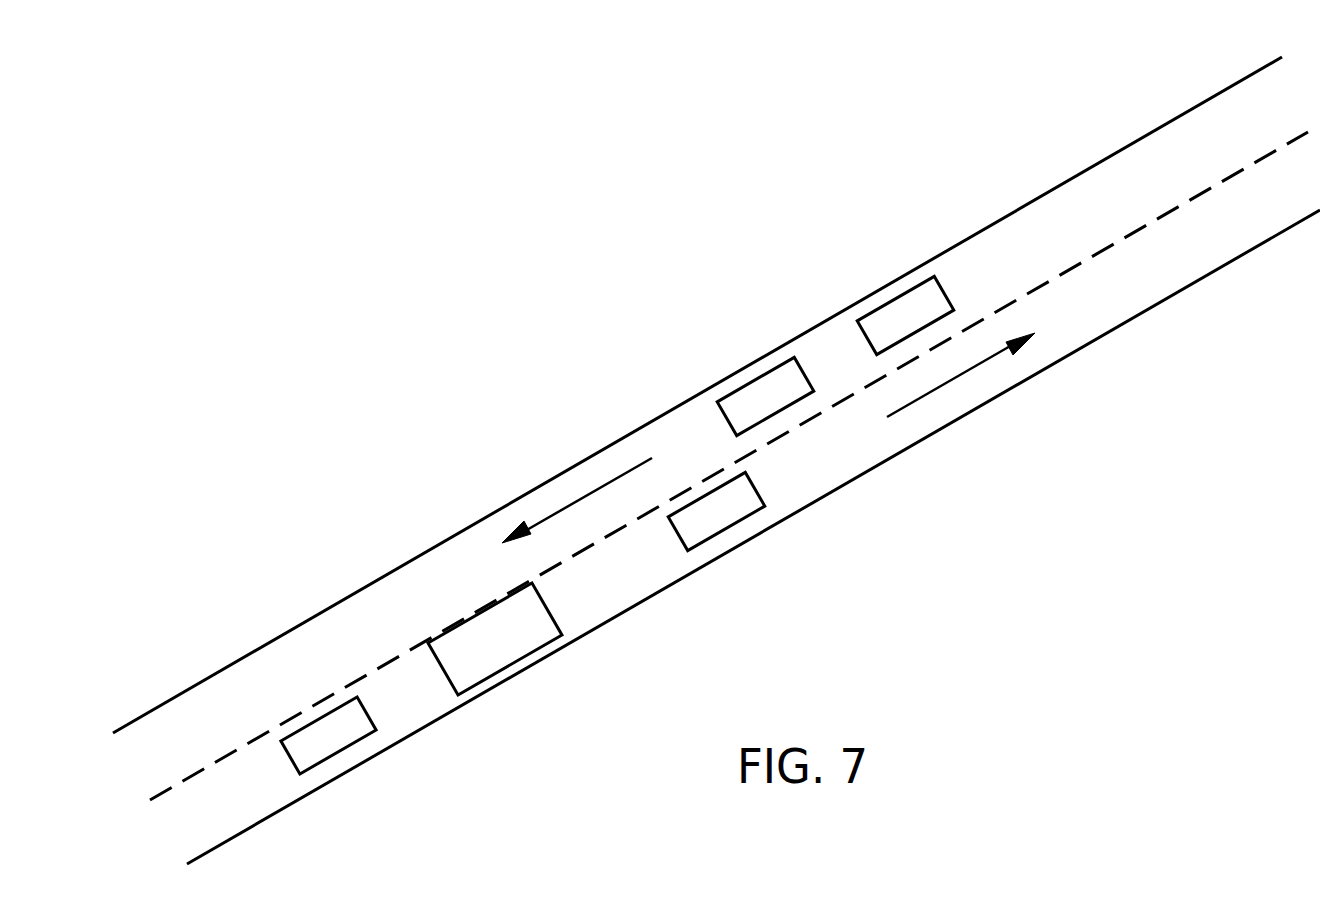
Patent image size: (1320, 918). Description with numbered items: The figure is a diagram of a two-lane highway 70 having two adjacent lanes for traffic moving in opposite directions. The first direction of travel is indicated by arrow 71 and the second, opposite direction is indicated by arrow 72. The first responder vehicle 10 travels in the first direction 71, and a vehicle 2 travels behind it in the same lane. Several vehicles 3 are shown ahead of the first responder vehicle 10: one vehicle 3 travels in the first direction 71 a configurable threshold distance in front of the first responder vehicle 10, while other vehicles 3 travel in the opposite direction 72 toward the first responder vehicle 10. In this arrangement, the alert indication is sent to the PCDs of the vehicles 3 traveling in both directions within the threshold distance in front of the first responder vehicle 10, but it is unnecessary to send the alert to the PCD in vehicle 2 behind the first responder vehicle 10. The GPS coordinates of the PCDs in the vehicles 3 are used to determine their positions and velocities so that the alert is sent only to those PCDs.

The road 70 is at (772, 531).
The vehicle 2 is at (321, 748).
The first responder vehicle 10 is at (481, 652).
The vehicles 3 is at (709, 524).
The arrow indicating first direction 71 is at (947, 381).
The arrow indicating second direction 72 is at (563, 503).